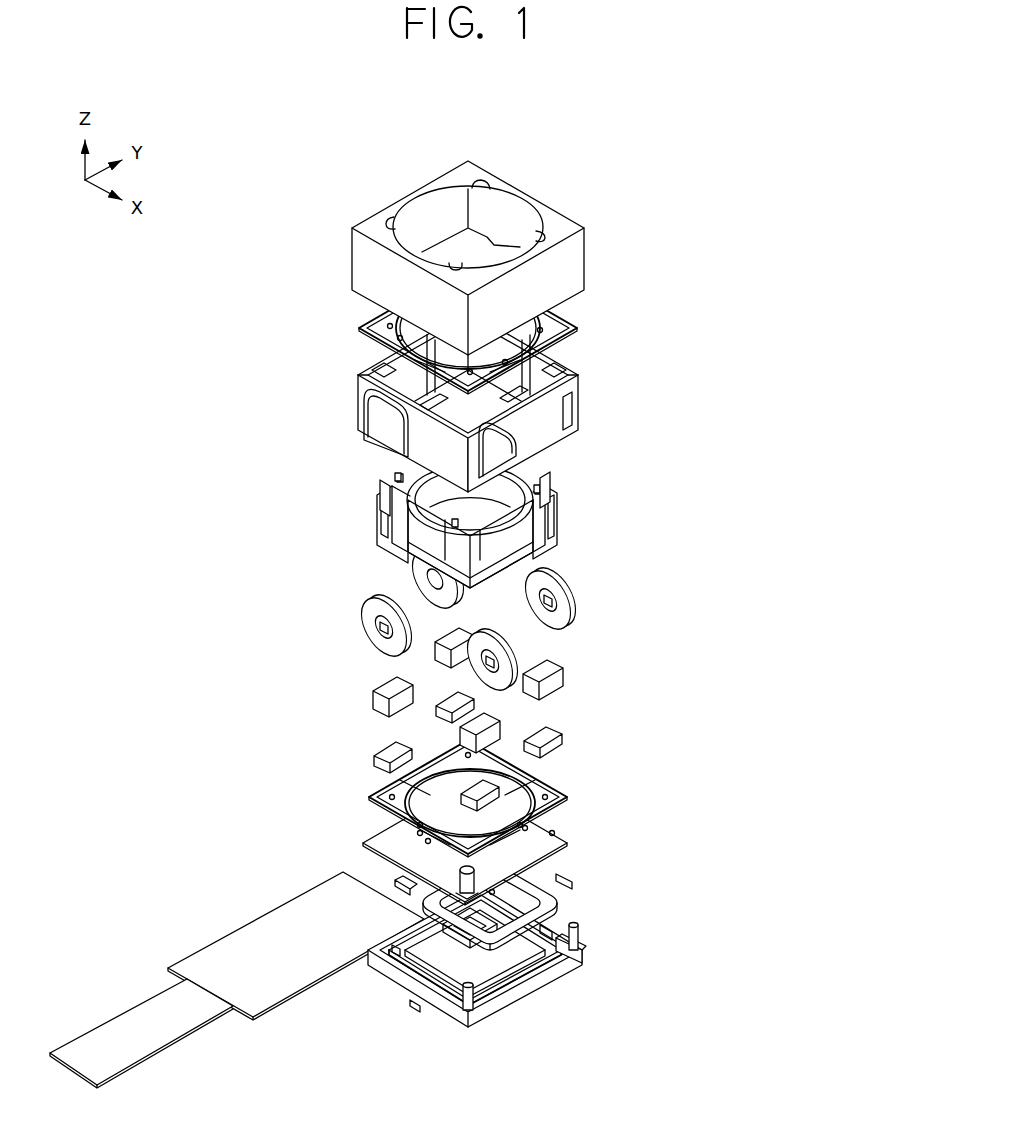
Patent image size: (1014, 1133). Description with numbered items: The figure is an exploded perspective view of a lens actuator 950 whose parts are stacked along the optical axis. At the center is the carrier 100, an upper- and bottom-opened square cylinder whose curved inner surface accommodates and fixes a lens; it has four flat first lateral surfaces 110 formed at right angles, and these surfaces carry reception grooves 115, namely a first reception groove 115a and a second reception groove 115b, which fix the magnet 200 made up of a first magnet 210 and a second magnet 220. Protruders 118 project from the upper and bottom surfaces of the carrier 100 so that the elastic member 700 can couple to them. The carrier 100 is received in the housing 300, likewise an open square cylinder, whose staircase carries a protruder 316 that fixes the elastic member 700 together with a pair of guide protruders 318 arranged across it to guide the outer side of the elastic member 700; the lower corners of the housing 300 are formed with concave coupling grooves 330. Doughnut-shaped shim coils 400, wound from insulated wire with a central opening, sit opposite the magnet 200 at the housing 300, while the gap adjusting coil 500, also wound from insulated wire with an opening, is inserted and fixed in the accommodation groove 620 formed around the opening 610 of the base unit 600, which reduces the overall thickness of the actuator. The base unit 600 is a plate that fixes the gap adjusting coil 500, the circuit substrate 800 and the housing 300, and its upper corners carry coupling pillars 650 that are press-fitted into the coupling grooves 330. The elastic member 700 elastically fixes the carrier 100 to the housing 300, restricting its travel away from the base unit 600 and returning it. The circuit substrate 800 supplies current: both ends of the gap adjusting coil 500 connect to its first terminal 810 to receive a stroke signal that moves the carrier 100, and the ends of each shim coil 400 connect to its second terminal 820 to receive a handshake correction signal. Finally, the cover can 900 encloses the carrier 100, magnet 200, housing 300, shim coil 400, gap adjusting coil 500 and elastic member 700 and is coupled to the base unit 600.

The lens actuator 950 is at (316, 129).
The cover can 900 is at (571, 184).
The elastic member 700 is at (588, 327).
The housing 300 is at (408, 412).
The protruder 316 is at (377, 372).
The guide protruders 318 is at (370, 427).
The coupling grooves 330 is at (387, 508).
The carrier 100 is at (485, 517).
The first lateral surfaces 110 is at (430, 553).
The reception grooves 115 is at (546, 526).
The first reception groove 115a is at (485, 566).
The second reception groove 115b is at (490, 548).
The protruders 118 is at (538, 487).
The shim coil 400 is at (579, 600).
The magnet 200 is at (551, 719).
The first magnet 210 is at (679, 690).
The second magnet 220 is at (573, 690).
The gap adjusting coil 500 is at (569, 892).
The base unit 600 is at (414, 1011).
The opening 610 is at (472, 959).
The accommodation groove 620 is at (578, 963).
The coupling pillars 650 is at (583, 935).
The circuit substrate 800 is at (289, 884).
The first terminal 810 is at (405, 883).
The second terminal 820 is at (571, 882).